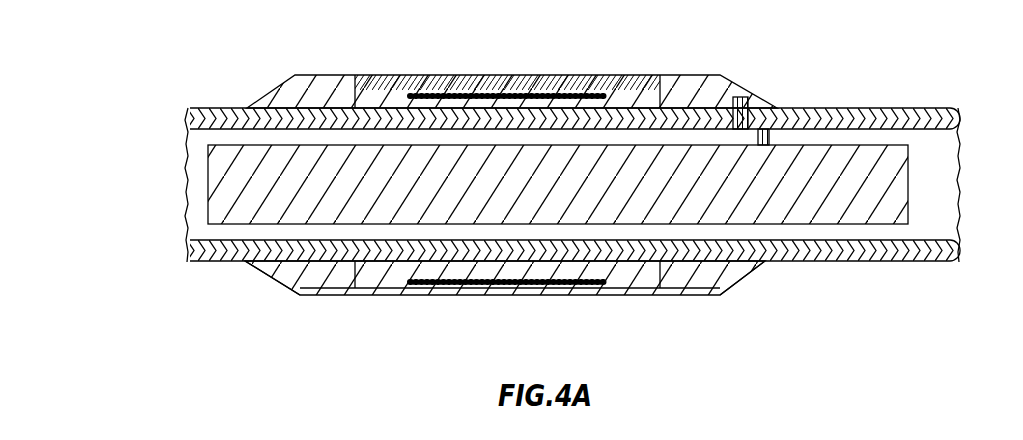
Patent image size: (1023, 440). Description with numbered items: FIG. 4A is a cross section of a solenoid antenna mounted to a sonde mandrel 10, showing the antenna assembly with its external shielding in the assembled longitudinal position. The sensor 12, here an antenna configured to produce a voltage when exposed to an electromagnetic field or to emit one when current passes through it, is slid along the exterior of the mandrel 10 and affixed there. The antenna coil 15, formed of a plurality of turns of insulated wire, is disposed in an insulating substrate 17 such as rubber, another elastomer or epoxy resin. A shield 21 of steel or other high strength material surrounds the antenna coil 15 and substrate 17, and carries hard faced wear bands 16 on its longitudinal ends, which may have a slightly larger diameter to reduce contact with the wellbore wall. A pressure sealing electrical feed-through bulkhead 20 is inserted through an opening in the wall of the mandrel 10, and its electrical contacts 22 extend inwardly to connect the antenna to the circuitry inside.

The mandrel 10 is at (212, 265).
The sensor 12 is at (165, 92).
The antenna coil 15 is at (477, 296).
The wear band 16 is at (290, 278).
The insulating substrate 17 is at (648, 296).
The electrical feed-through bulkhead 20 is at (745, 108).
The shield 21 is at (547, 296).
The electrical contacts 22 is at (772, 138).